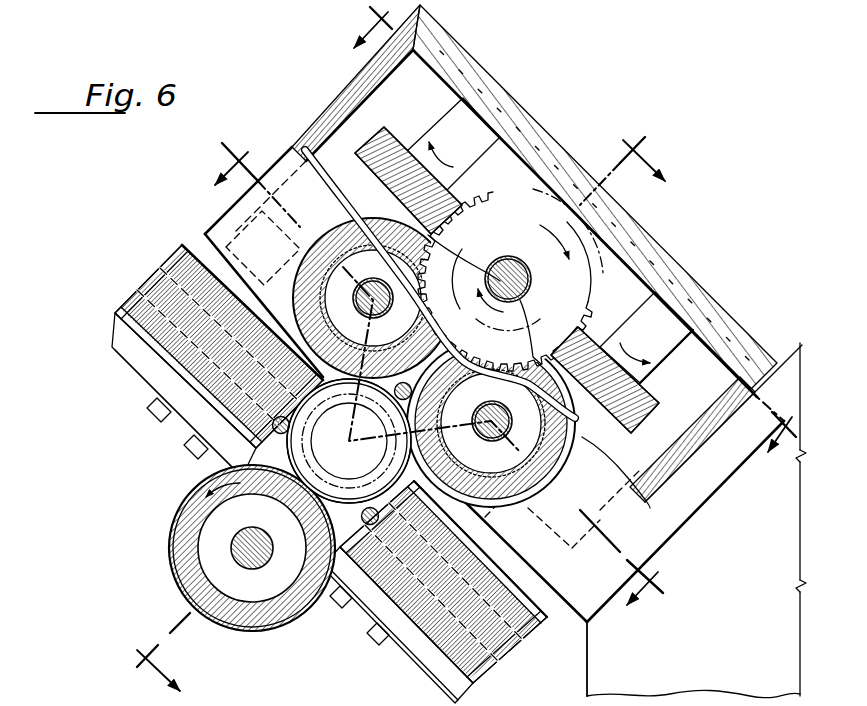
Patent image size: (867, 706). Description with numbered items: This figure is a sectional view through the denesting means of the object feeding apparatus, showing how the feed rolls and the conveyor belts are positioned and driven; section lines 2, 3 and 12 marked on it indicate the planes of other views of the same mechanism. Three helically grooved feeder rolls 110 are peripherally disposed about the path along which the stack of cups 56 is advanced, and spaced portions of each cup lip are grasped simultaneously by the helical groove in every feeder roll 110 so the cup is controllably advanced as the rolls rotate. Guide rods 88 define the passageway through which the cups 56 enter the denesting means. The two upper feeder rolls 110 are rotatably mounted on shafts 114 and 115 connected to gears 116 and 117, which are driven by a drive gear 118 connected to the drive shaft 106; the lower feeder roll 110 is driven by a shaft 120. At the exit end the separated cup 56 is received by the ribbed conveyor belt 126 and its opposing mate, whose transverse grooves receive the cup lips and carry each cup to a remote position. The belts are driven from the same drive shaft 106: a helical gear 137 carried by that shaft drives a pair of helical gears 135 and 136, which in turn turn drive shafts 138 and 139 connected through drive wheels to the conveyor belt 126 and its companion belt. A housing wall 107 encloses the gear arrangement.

The section line 2- 2 is at (564, 250).
The section line 3- 3 is at (410, 420).
The section line 12- 12 is at (423, 390).
The cup 56 is at (292, 463).
The guide rods 88 is at (290, 427).
The drive shaft 106 is at (512, 256).
The housing wall 107 is at (320, 128).
The feeder roll 110 is at (300, 272).
The shaft 114 is at (487, 407).
The shaft 115 is at (379, 313).
The gear 116 is at (575, 400).
The gear 117 is at (371, 218).
The drive gear 118 is at (530, 314).
The shaft 120 is at (259, 565).
The conveyor belt 126 is at (137, 291).
The helical gear 135 is at (391, 138).
The helical gear 136 is at (643, 396).
The helical gear 137 is at (478, 196).
The drive shaft 138 is at (444, 116).
The drive shaft 139 is at (642, 318).